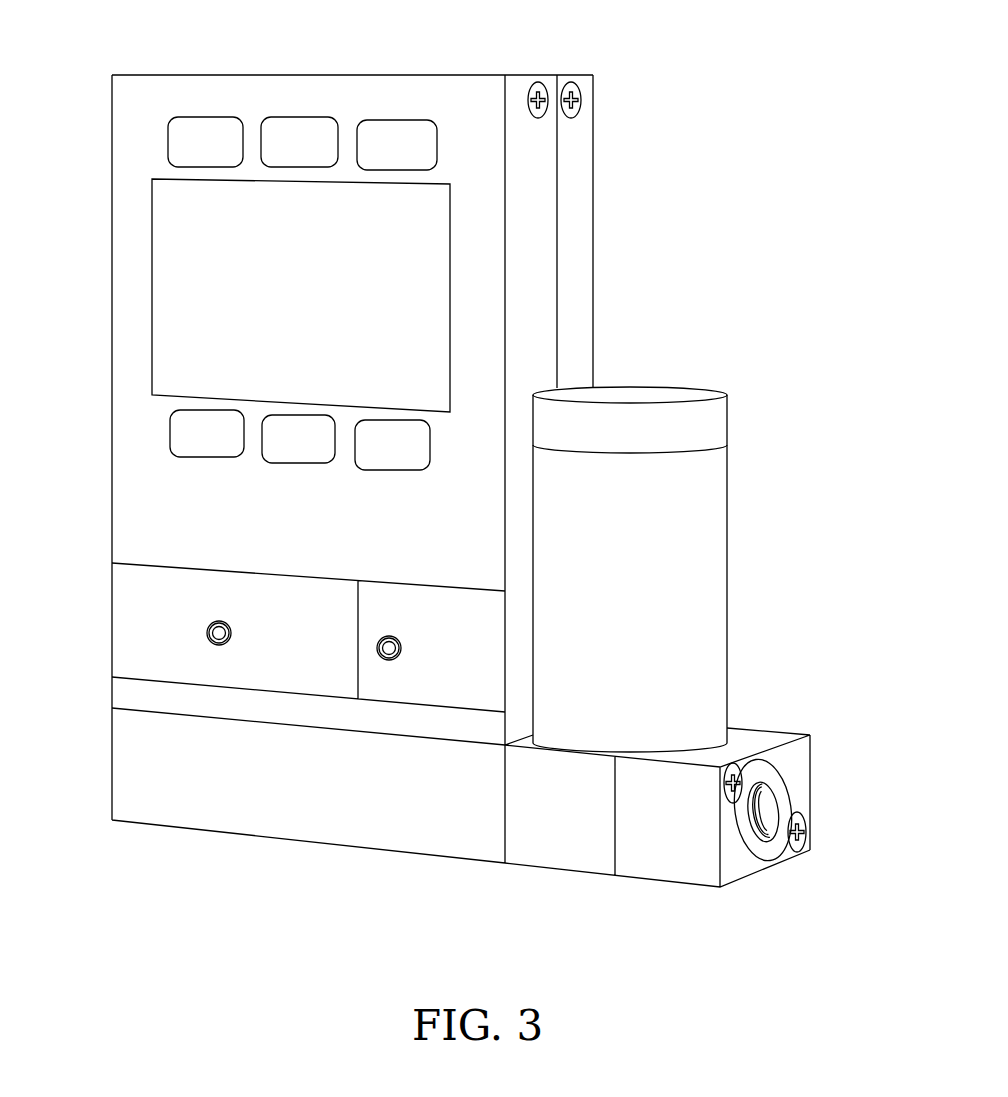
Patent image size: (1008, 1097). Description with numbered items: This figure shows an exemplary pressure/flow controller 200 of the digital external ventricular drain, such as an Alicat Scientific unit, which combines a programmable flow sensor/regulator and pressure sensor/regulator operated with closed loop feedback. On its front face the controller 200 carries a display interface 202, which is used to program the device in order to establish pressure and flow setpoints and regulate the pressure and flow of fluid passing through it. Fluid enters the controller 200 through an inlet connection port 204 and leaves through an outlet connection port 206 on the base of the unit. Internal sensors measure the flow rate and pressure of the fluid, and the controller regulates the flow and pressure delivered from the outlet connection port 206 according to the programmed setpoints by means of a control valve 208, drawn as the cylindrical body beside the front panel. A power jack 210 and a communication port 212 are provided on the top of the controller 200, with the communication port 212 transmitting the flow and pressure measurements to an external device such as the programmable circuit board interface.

The pressure/flow controller 200 is at (684, 50).
The display interface 202 is at (267, 288).
The inlet connection port 204 is at (112, 745).
The outlet connection port 206 is at (773, 803).
The control valve 208 is at (687, 553).
The power jack 210 is at (252, 85).
The communication port 212 is at (432, 75).